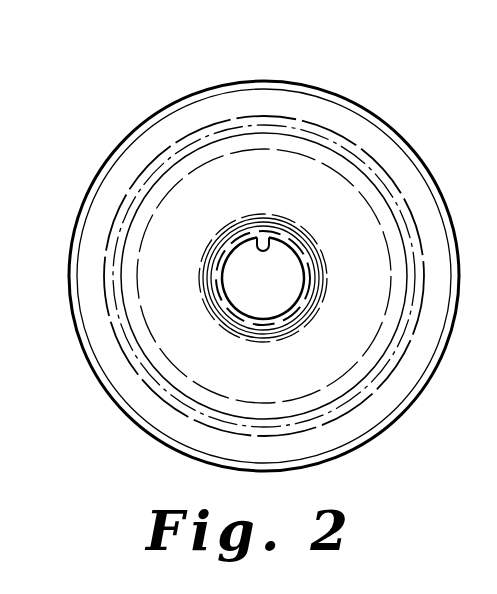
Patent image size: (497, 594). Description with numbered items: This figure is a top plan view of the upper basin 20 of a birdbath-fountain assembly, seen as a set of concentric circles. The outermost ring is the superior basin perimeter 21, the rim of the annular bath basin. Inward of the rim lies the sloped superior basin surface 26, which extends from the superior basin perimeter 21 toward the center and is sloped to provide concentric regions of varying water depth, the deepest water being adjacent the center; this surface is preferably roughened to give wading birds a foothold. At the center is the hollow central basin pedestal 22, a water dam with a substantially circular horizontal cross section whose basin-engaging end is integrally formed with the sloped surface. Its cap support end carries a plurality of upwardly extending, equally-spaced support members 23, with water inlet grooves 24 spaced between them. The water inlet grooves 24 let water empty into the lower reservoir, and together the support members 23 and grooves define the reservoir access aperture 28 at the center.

The upper basin 20 is at (104, 144).
The superior basin perimeter 21 is at (172, 102).
The hollow central basin pedestal 22 is at (240, 320).
The support members 23 is at (266, 238).
The water inlet grooves 24 is at (303, 238).
The superior basin surface 26 is at (237, 167).
The reservoir access aperture 28 is at (276, 286).